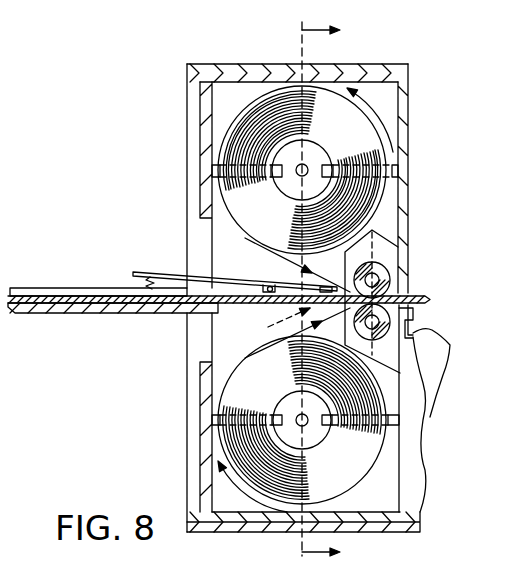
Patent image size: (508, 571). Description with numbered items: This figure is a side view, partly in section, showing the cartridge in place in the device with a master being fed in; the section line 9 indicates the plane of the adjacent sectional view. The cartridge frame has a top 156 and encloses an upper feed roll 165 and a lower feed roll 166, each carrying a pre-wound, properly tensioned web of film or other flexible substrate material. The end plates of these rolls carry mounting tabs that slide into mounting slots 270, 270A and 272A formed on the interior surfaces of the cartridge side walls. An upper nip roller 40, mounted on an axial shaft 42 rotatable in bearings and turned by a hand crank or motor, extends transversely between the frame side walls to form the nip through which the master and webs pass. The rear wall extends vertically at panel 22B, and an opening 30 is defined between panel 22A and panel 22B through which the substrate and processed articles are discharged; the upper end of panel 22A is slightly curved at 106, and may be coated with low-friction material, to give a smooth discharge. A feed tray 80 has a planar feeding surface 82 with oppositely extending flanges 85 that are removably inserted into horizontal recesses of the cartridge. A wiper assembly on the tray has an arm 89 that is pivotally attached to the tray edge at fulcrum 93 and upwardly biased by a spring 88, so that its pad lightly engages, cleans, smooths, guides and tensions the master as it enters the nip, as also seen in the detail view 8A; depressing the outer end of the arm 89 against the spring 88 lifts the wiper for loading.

The section line 9- 9 is at (327, 295).
The top 156 is at (360, 77).
The panel 22B is at (407, 95).
The panel 22A is at (440, 350).
The upper feed roll 165 is at (277, 107).
The lower feed roll 166 is at (237, 402).
The mounting slot 270 is at (402, 174).
The mounting slot 270A is at (397, 419).
The mounting slot 272A is at (213, 419).
The upper nip roller 40 is at (380, 263).
The axial shaft 42 is at (383, 280).
The opening 30 is at (407, 298).
The tape feed direction 8A is at (274, 326).
The curved upper end 106 is at (413, 335).
The feed tray 80 is at (113, 299).
The planar feeding surface 82 is at (28, 288).
The flanges 85 is at (80, 313).
The arm 89 is at (177, 275).
The spring 88 is at (145, 285).
The fulcrum 93 is at (273, 281).